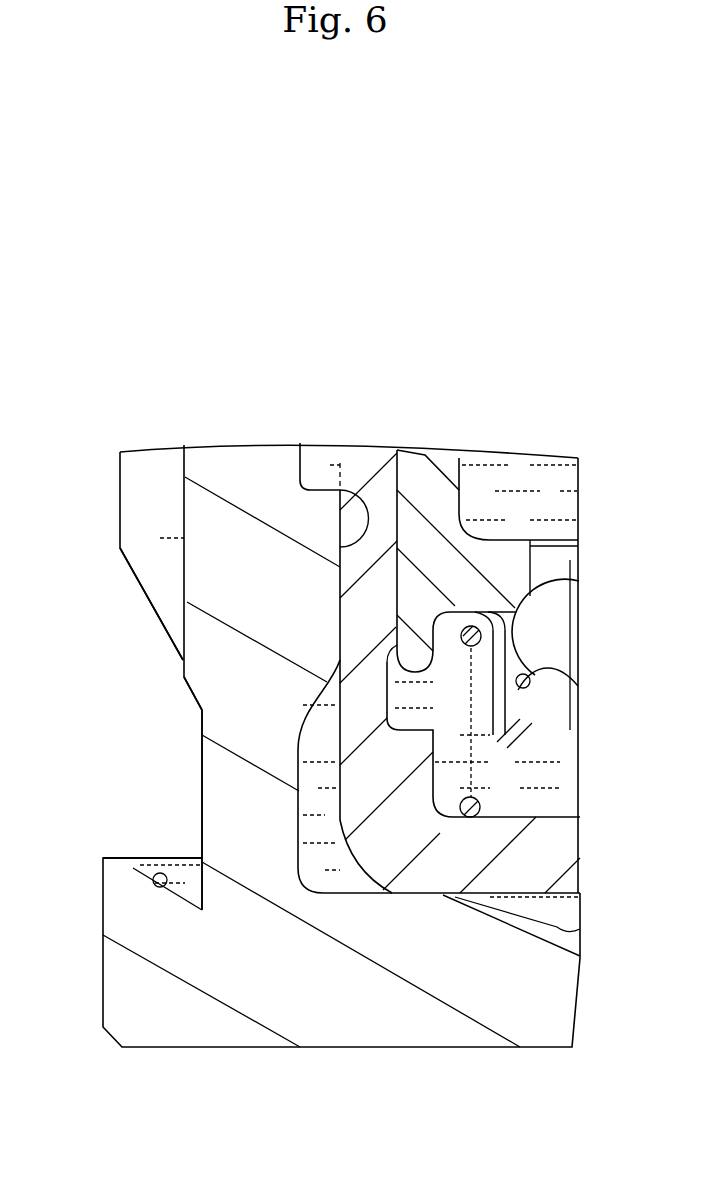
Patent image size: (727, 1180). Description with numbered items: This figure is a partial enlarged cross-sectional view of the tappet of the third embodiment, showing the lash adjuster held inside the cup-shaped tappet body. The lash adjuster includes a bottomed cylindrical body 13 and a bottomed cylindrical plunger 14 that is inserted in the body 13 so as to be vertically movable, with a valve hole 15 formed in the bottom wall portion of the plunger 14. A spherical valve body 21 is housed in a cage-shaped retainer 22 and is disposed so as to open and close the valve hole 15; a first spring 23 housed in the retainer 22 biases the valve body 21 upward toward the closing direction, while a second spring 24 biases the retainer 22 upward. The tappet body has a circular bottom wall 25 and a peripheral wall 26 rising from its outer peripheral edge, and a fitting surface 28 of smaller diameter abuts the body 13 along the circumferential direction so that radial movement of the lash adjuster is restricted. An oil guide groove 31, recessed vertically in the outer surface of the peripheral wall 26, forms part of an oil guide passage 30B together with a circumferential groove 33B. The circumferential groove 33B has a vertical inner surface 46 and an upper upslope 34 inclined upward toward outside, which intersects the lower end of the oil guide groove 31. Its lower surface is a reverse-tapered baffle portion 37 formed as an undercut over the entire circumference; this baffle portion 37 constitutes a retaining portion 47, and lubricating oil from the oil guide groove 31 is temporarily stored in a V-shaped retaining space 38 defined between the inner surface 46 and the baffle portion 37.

The body 13 is at (390, 452).
The plunger 14 is at (448, 462).
The valve hole 15 is at (553, 567).
The valve body 21 is at (568, 636).
The retainer 22 is at (555, 745).
The first spring 23 is at (531, 684).
The second spring 24 is at (480, 808).
The bottom wall 25 is at (455, 1047).
The peripheral wall 26 is at (247, 444).
The fitting surface 28 is at (362, 496).
The oil guide passage 30B is at (72, 553).
The oil guide groove 31 is at (183, 538).
The circumferential groove 33B is at (199, 762).
The upslope 34 is at (165, 630).
The baffle portion 37 is at (135, 870).
The retaining space 38 is at (173, 857).
The inner surface 46 is at (200, 716).
The retaining portion 47 is at (160, 887).